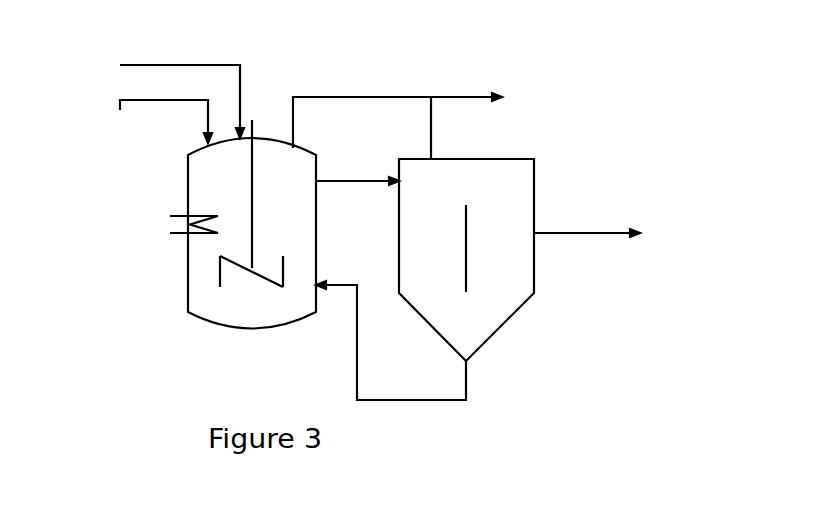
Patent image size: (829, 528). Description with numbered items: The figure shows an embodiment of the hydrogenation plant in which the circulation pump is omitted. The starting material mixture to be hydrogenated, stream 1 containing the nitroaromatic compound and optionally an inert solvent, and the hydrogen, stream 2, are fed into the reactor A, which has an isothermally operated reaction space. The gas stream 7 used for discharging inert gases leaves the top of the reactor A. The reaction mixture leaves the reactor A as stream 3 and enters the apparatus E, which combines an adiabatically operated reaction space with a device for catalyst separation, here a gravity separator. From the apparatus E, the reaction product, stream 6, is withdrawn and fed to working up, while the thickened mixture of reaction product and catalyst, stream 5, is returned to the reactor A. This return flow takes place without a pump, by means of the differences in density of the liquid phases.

The starting material mixture stream 1 is at (152, 117).
The hydrogen stream 2 is at (166, 93).
The reaction mixture stream 3 is at (357, 165).
The thickened mixture stream 5 is at (391, 362).
The reaction product stream 6 is at (605, 240).
The gas stream 7 is at (412, 123).
The reactor A is at (243, 224).
The apparatus with adiabatically operated reaction space and catalyst separation dev E is at (466, 260).